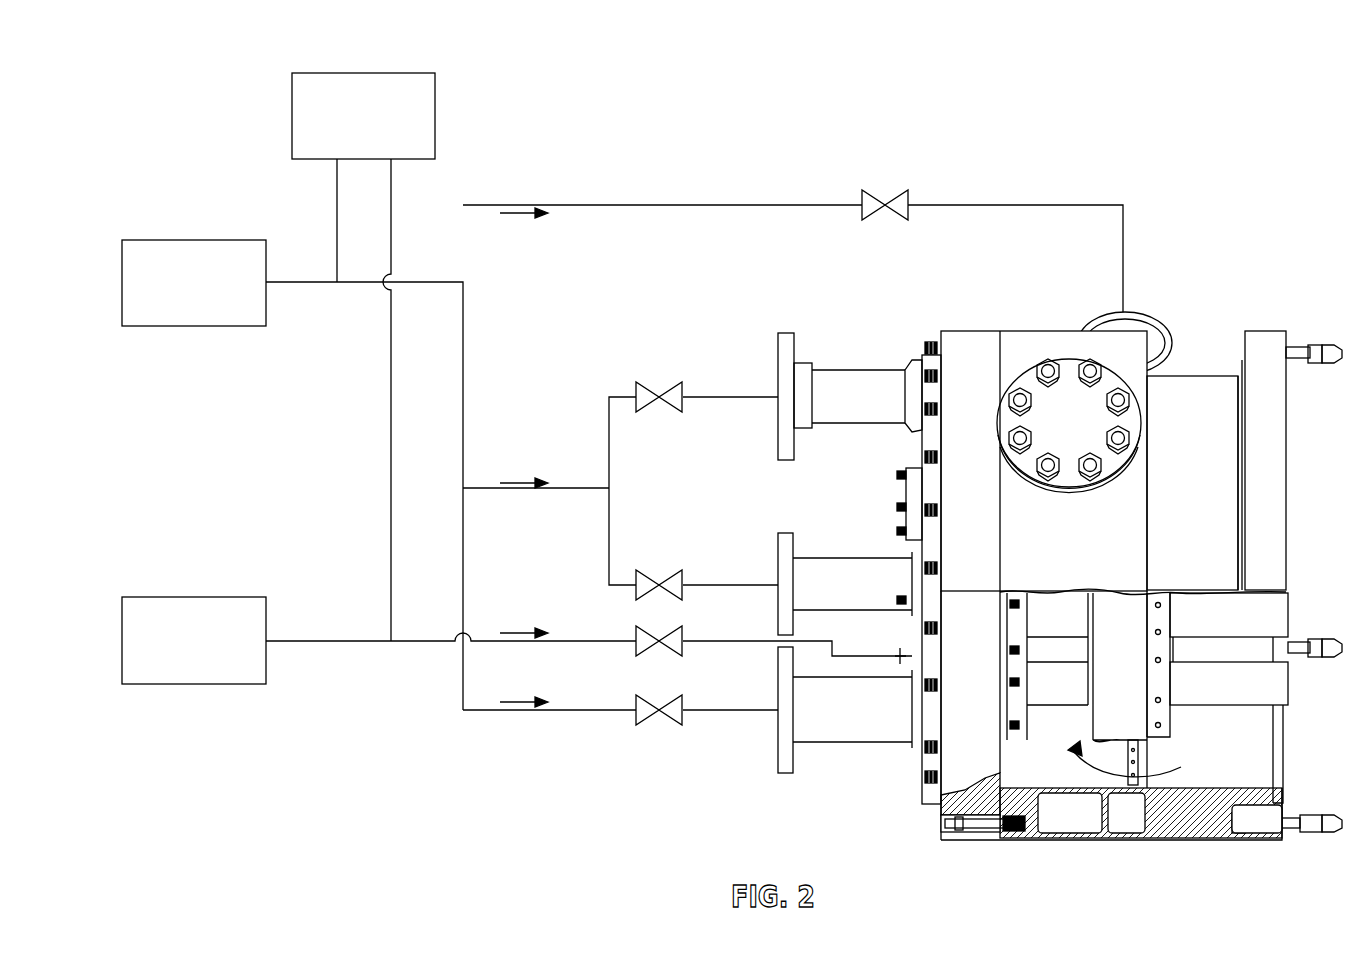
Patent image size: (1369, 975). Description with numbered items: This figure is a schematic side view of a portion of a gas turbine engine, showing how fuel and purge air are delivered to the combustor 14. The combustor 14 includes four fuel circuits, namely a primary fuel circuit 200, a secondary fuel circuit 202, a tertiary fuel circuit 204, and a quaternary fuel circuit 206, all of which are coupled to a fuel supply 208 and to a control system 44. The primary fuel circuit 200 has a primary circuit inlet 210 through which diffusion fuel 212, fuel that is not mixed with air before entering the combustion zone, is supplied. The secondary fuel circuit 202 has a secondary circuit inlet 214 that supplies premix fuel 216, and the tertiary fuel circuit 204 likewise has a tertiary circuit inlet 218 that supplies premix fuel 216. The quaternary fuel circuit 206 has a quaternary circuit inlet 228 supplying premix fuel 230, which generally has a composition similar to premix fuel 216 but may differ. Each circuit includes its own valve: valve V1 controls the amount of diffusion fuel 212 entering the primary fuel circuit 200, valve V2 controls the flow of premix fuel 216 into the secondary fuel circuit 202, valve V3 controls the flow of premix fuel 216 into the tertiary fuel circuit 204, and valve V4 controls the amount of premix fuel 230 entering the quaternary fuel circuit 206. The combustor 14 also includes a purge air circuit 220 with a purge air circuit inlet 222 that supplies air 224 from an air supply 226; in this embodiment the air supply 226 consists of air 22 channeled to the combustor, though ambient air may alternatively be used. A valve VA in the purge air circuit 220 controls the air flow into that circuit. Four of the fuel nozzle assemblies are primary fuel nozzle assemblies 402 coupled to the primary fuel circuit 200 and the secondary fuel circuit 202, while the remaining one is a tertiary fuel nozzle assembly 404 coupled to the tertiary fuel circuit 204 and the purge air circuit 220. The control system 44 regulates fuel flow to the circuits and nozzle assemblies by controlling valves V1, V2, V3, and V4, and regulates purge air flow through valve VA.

The combustor 14 is at (1240, 37).
The air 22 is at (1170, 767).
The control system 44 is at (344, 73).
The primary fuel circuit 200 is at (706, 710).
The secondary fuel circuit 202 is at (706, 397).
The tertiary fuel circuit 204 is at (706, 585).
The quaternary fuel circuit 206 is at (705, 205).
The fuel supply 208 is at (189, 240).
The primary circuit inlet 210 is at (778, 738).
The diffusion fuel 212 is at (522, 702).
The secondary circuit inlet 214 is at (778, 426).
The premix fuel 216 is at (518, 483).
The tertiary circuit inlet 218 is at (778, 610).
The purge air circuit 220 is at (557, 641).
The purge air circuit inlet 222 is at (889, 644).
The air 224 is at (518, 632).
The air supply 226 is at (189, 597).
The quaternary circuit inlet 228 is at (1145, 318).
The premix fuel 230 is at (520, 215).
The primary fuel nozzle assembly 402 is at (1282, 613).
The tertiary fuel nozzle assembly 404 is at (1282, 688).
The valve V1 is at (641, 716).
The valve V2 is at (641, 392).
The valve V3 is at (641, 581).
The valve V4 is at (872, 213).
The valve VA is at (641, 645).